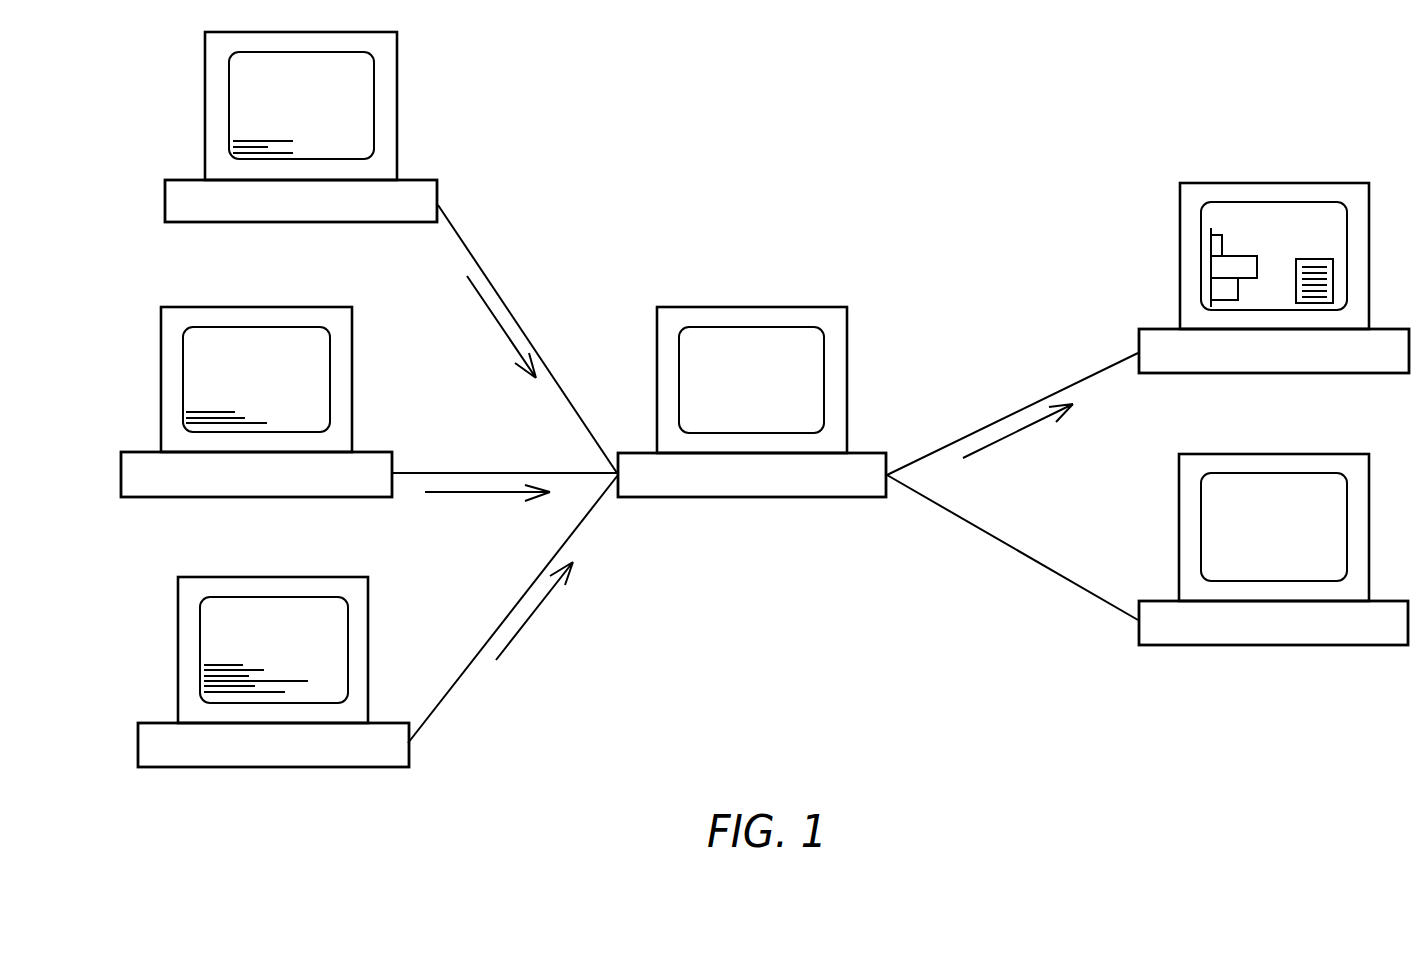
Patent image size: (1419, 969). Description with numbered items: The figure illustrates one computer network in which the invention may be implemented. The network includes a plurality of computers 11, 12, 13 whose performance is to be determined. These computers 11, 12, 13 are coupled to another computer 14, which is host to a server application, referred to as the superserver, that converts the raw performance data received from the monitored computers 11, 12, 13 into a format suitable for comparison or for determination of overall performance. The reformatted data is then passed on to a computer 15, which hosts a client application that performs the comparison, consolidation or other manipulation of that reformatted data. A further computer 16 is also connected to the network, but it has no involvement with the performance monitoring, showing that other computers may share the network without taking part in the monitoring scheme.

The computer 11 is at (317, 94).
The computer 12 is at (272, 366).
The computer 13 is at (290, 637).
The computer 14 is at (767, 366).
The computer 15 is at (1290, 242).
The computer 16 is at (1289, 514).